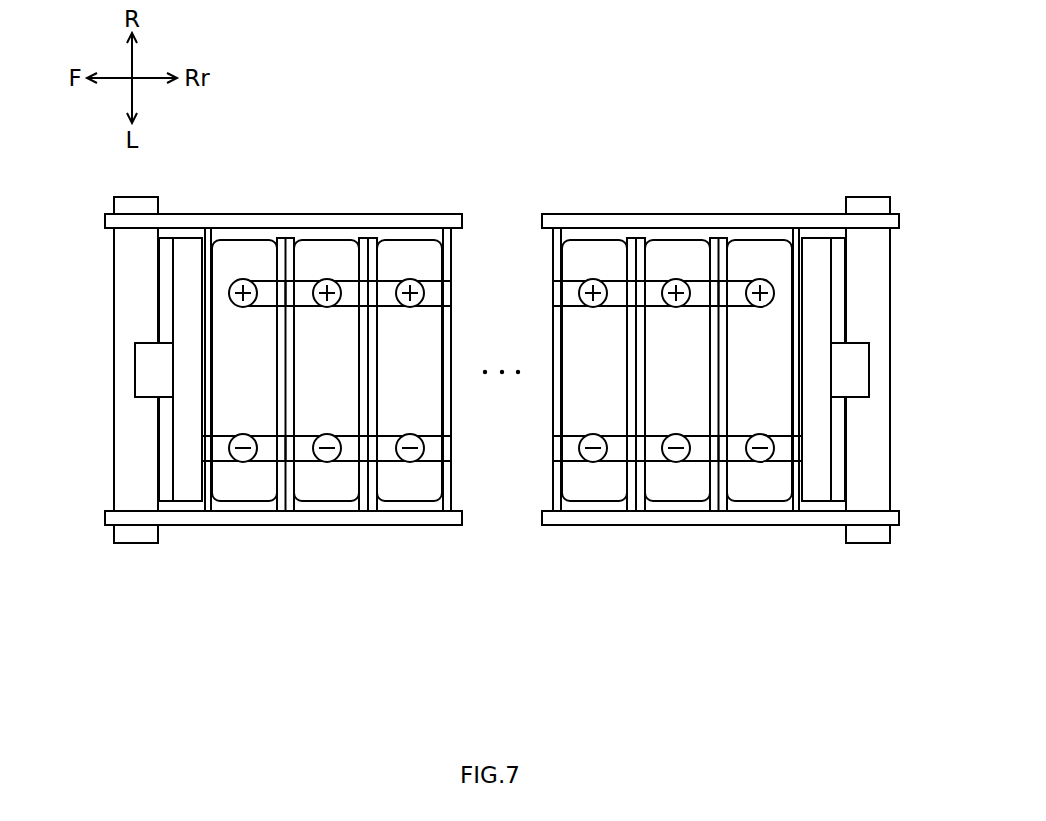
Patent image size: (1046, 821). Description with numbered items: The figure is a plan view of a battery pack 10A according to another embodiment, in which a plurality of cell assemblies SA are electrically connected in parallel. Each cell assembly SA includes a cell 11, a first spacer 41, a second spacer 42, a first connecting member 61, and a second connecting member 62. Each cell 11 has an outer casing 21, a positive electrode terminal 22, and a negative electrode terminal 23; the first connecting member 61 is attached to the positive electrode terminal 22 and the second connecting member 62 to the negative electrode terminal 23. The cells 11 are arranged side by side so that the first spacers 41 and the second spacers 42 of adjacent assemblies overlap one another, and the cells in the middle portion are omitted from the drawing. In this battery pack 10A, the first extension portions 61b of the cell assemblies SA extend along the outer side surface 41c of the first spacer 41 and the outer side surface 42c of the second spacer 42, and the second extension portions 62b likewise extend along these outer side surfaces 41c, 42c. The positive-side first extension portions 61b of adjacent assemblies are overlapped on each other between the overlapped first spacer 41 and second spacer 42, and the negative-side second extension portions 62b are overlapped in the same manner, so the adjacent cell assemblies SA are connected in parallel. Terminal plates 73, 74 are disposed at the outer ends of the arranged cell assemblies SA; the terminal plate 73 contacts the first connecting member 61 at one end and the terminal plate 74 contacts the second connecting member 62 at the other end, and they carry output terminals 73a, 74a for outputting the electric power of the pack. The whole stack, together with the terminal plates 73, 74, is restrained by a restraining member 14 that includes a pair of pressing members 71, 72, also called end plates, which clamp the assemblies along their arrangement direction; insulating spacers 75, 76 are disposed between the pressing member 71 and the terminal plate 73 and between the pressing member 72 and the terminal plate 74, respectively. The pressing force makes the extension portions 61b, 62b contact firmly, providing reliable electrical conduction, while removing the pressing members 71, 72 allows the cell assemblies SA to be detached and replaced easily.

The battery pack 10A is at (548, 140).
The cell 11 is at (376, 238).
The restraining member 14 is at (462, 213).
The outer casing 21 is at (430, 258).
The positive electrode terminal 22 is at (243, 308).
The negative electrode terminal 23 is at (243, 434).
The first spacer 41 is at (362, 508).
The outer side surface of the first spacer 41c is at (451, 388).
The second spacer 42 is at (208, 505).
The outer side surface of the second spacer 42c is at (551, 350).
The first connecting member 61 is at (263, 281).
The first extension portion 61b is at (551, 290).
The second connecting member 62 is at (220, 462).
The second extension portion 62b is at (551, 452).
The pressing member 71 is at (890, 288).
The pressing member 72 is at (114, 280).
The terminal plate 73 is at (831, 437).
The output terminal 73a is at (869, 372).
The terminal plate 74 is at (173, 418).
The output terminal 74a is at (135, 372).
The insulating spacer 75 is at (860, 530).
The insulating spacer 76 is at (165, 497).
The cell assembly SA is at (236, 238).